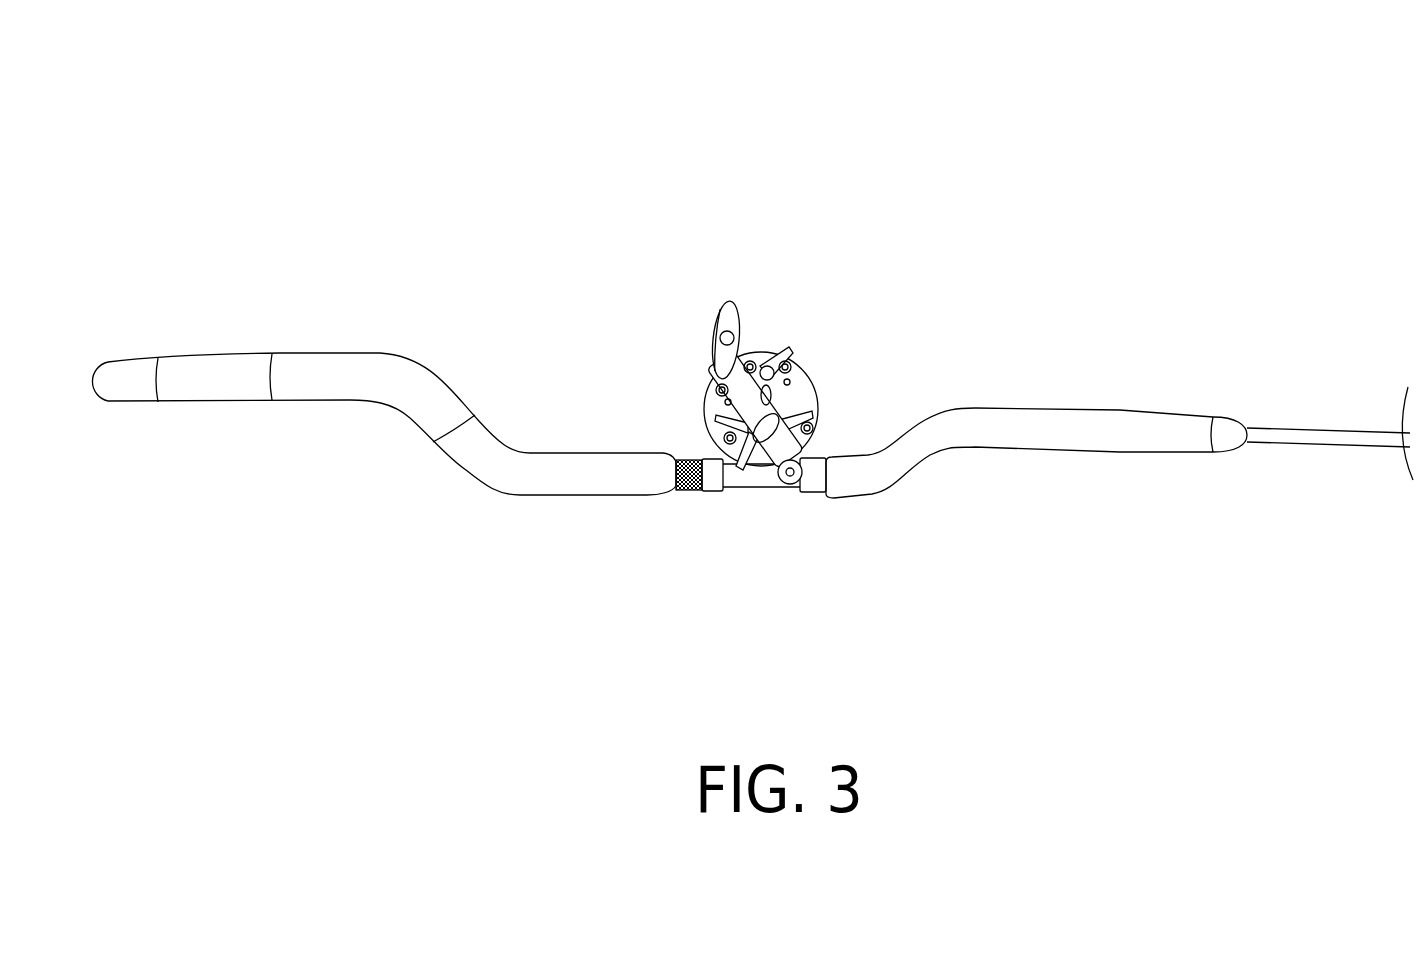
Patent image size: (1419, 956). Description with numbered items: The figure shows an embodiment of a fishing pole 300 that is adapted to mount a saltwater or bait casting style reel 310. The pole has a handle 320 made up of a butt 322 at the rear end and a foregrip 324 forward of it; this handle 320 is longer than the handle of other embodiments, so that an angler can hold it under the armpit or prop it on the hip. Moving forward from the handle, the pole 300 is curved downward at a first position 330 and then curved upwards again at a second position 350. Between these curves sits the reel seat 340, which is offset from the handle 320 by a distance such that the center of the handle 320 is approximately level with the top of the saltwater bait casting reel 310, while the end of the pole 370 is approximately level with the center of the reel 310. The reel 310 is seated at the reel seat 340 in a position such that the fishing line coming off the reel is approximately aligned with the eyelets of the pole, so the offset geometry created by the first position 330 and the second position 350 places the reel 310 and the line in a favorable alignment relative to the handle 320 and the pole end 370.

The fishing pole 300 is at (205, 134).
The saltwater bait casting reel 310 is at (684, 352).
The handle 320 is at (265, 352).
The butt 322 is at (150, 411).
The foregrip 324 is at (354, 404).
The first position 330 is at (456, 492).
The reel seat 340 is at (764, 508).
The second position 350 is at (960, 508).
The end of the pole 370 is at (1261, 414).